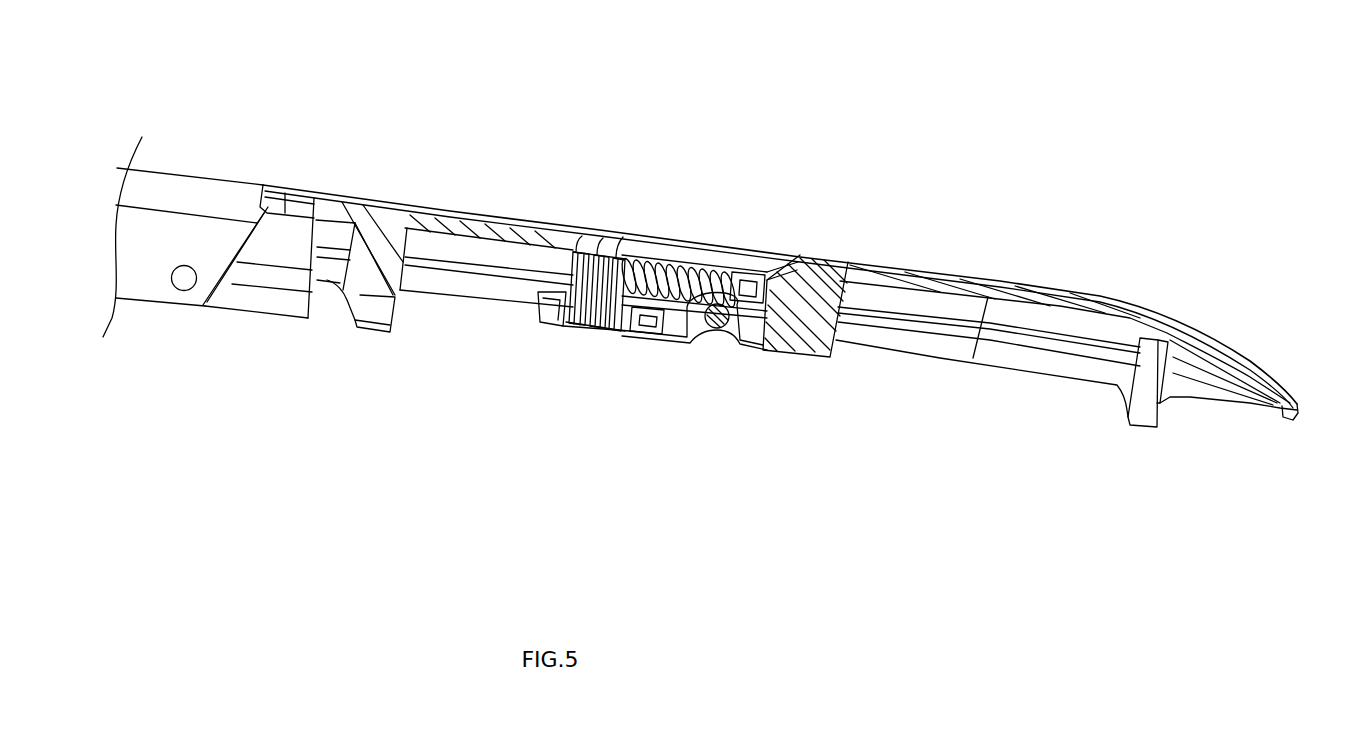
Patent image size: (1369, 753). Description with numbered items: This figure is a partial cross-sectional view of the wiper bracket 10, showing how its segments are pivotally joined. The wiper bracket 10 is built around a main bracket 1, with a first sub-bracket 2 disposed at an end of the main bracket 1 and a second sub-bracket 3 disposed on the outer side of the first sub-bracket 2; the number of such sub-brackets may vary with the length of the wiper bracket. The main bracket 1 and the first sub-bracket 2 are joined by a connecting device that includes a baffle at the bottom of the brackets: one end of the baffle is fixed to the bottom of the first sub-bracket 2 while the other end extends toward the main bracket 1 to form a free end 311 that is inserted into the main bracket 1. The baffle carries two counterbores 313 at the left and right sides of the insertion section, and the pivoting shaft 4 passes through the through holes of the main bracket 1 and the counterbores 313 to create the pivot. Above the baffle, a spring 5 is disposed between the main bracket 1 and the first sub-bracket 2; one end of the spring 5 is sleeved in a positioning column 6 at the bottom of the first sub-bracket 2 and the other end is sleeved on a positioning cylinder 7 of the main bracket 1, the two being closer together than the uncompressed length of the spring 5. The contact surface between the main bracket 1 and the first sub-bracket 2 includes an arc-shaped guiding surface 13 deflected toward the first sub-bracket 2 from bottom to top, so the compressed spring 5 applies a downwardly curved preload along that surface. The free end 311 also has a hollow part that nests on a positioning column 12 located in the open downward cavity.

The main bracket 1 is at (165, 183).
The arc-shaped guiding surface 13 is at (238, 257).
The first sub-bracket 2 is at (285, 113).
The wiper bracket 10 is at (780, 148).
The positioning column 12 is at (592, 250).
The positioning cylinder 7 is at (640, 245).
The spring 5 is at (678, 255).
The counterbore 313 is at (710, 252).
The pivoting shaft 4 is at (732, 252).
The positioning column 6 is at (767, 252).
The second sub-bracket 3 is at (815, 195).
The free end 311 is at (550, 328).